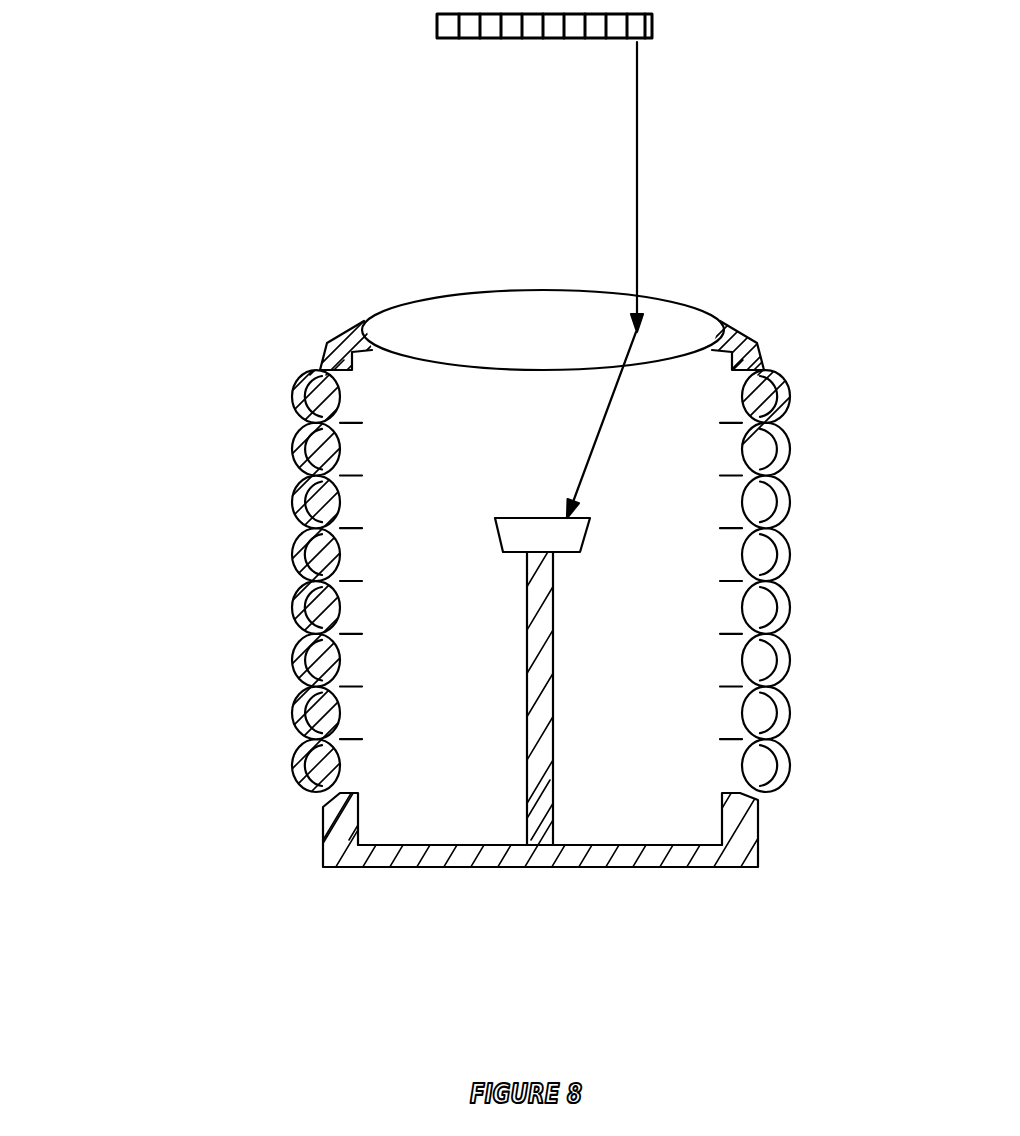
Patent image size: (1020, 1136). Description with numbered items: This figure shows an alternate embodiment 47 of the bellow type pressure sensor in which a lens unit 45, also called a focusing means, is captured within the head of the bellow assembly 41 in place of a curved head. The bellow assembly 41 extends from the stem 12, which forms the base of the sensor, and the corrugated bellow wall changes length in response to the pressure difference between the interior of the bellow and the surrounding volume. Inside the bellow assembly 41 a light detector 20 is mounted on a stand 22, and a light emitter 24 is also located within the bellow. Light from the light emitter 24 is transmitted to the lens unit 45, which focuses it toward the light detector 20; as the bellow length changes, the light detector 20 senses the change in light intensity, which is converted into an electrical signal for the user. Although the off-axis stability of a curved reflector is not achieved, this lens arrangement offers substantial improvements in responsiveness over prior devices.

The stem 12 is at (760, 832).
The light detector 20 is at (500, 538).
The stand 22 is at (553, 818).
The light emitter 24 is at (462, 770).
The bellow assembly 41 is at (290, 557).
The lens unit 45 is at (447, 292).
The alternate embodiment of the pressure sensor 47 is at (657, 257).